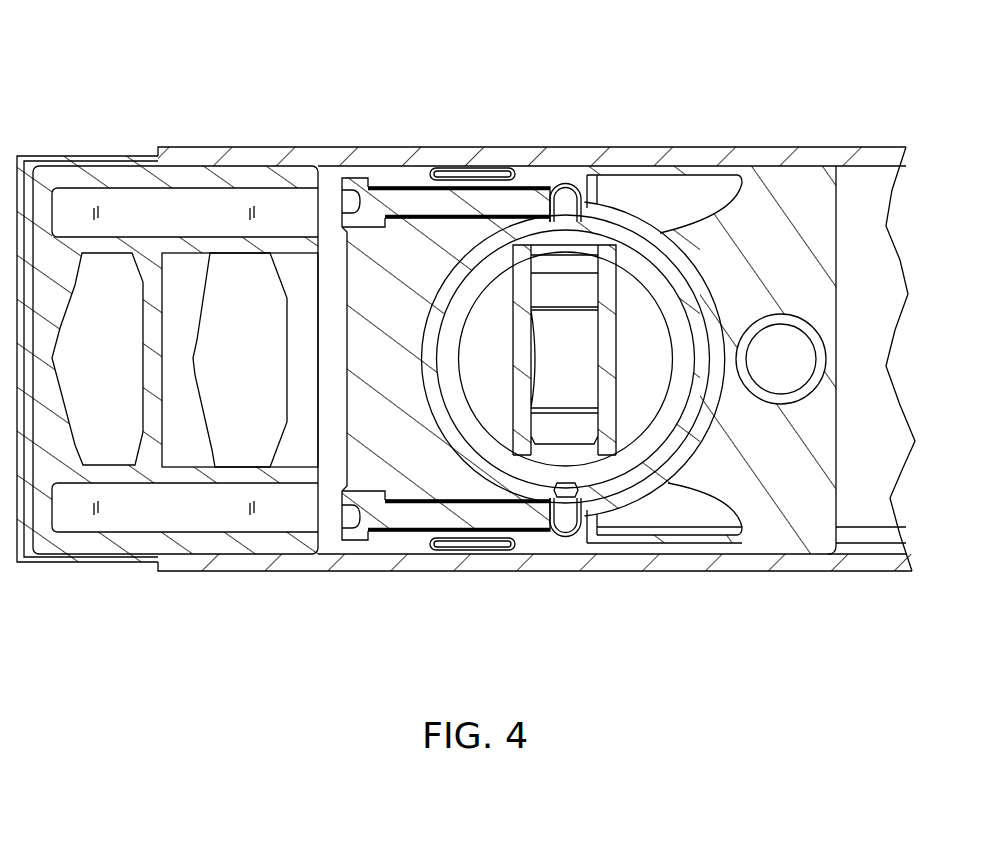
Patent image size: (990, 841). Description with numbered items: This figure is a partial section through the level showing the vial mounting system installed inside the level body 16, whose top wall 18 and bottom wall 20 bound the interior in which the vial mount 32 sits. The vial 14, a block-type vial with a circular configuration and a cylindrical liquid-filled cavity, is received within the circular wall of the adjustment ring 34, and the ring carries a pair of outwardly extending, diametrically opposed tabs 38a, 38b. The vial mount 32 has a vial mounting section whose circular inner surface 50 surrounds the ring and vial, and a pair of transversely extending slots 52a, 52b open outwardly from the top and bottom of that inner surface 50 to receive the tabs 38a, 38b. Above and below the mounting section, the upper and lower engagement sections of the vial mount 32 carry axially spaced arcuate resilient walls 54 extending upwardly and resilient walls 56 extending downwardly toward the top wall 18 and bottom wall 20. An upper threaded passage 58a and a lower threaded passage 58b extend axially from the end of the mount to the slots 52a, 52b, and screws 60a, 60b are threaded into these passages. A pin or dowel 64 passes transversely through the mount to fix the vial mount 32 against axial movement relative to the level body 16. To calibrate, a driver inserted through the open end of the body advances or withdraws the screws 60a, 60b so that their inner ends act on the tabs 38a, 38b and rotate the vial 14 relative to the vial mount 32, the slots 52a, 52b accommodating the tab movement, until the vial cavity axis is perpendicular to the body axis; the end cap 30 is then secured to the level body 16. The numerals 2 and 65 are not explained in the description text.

The camera body 2 is at (868, 395).
The vial 14 is at (686, 320).
The level body 16 is at (906, 146).
The top wall 18 is at (812, 150).
The bottom wall 20 is at (800, 570).
The end cap 30 is at (118, 567).
The vial mount 32 is at (857, 501).
The adjustment ring 34 is at (667, 240).
The tab 38a is at (558, 195).
The tab 38b is at (563, 547).
The inner surface 50 is at (655, 290).
The slot 52a is at (580, 180).
The slot 52b is at (575, 538).
The resilient walls 54 is at (467, 167).
The resilient walls 56 is at (470, 556).
The upper threaded passage 58a is at (417, 177).
The lower threaded passage 58b is at (385, 528).
The screw 60a is at (392, 187).
The screw 60b is at (410, 543).
The pin or dowel 64 is at (815, 327).
The lower groove 65 is at (680, 546).